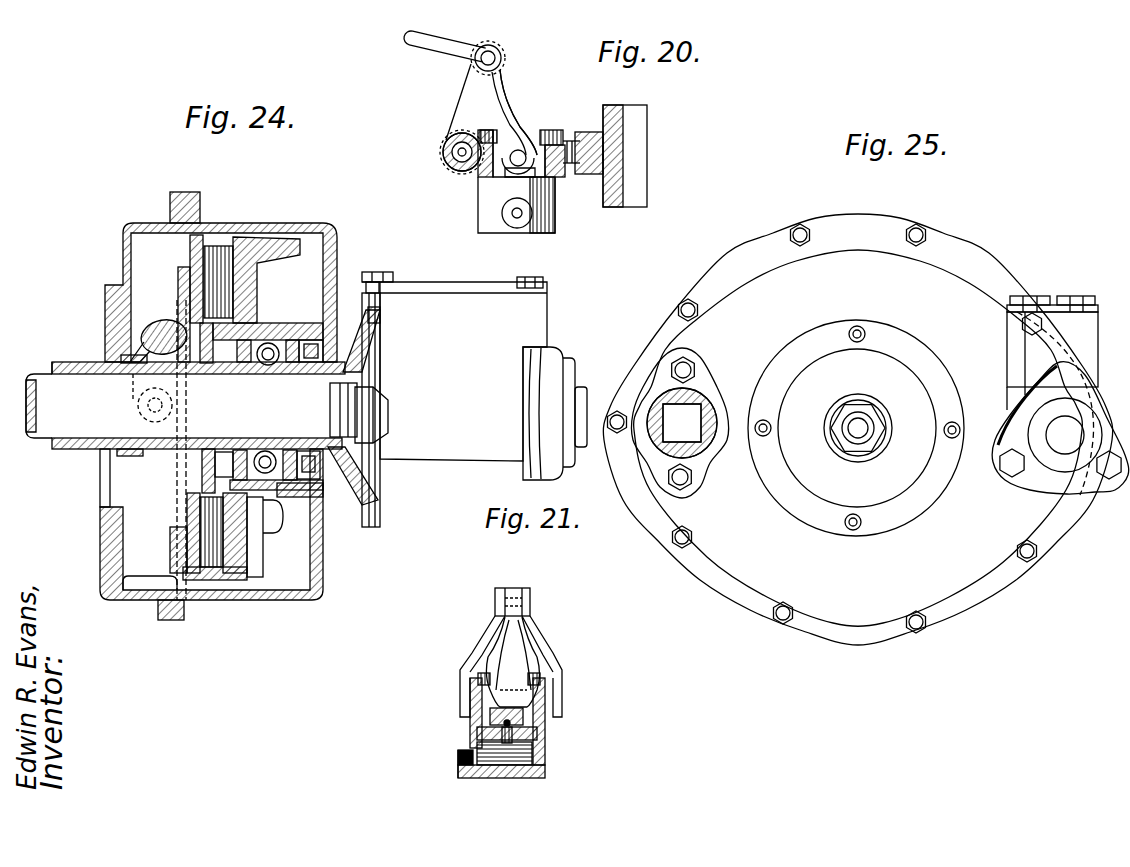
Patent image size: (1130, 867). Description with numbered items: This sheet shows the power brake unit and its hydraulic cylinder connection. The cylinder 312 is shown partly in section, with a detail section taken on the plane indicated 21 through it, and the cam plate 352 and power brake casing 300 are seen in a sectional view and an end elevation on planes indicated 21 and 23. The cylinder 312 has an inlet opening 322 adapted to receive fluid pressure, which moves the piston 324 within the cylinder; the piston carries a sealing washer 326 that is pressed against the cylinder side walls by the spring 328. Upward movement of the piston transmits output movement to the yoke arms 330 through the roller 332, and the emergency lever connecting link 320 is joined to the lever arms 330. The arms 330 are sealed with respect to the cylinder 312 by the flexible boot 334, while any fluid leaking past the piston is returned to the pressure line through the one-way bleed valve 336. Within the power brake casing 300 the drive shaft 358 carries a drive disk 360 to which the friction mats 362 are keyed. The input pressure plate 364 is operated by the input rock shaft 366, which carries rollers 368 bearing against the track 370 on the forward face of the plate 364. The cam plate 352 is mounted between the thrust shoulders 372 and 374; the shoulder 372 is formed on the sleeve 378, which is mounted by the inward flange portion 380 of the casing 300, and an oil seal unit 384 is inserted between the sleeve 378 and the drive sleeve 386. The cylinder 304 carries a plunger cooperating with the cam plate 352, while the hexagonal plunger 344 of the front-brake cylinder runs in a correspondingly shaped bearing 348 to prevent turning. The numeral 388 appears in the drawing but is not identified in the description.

In FIG. 24, the power brake casing 300 is at (247, 224).
In FIG. 25, the power brake casing 300 is at (853, 600).
In FIG. 24, the cylinder 304 is at (446, 318).
In FIG. 25, the cylinder 304 is at (1025, 382).
In FIG. 20, the cylinder 312 is at (552, 207).
In FIG. 21, the cylinder 312 is at (547, 750).
In FIG. 20, the emergency lever connecting link 320 is at (410, 44).
In FIG. 21, the emergency lever connecting link 320 is at (512, 591).
In FIG. 20, the inlet opening 322 is at (503, 213).
In FIG. 21, the inlet opening 322 is at (458, 756).
In FIG. 21, the piston 324 is at (520, 712).
In FIG. 21, the sealing washer 326 is at (538, 732).
In FIG. 21, the spring 328 is at (500, 760).
In FIG. 20, the yoke arms 330 is at (508, 127).
In FIG. 21, the yoke arms 330 is at (513, 692).
In FIG. 21, the roller 332 is at (530, 673).
In FIG. 20, the flexible boot 334 is at (540, 130).
In FIG. 21, the flexible boot 334 is at (482, 672).
In FIG. 21, the one-way bleed valve 336 is at (492, 722).
In FIG. 25, the plunger 344 is at (703, 400).
In FIG. 25, the bearing 348 is at (702, 455).
In FIG. 24, the cam plate 352 is at (257, 272).
In FIG. 24, the drive shaft 358 is at (52, 362).
In FIG. 24, the drive disk 360 is at (205, 470).
In FIG. 24, the friction mats 362 is at (200, 523).
In FIG. 24, the input pressure plate 364 is at (172, 557).
In FIG. 24, the input rock shaft 366 is at (140, 343).
In FIG. 24, the rollers 368 is at (133, 400).
In FIG. 24, the track 370 is at (191, 268).
In FIG. 24, the thrust shoulder 372 is at (249, 312).
In FIG. 24, the thrust shoulder 374 is at (283, 328).
In FIG. 24, the sleeve 378 is at (310, 338).
In FIG. 24, the inward flange portion 380 is at (300, 497).
In FIG. 24, the oil seal unit 384 is at (212, 330).
In FIG. 24, the drive sleeve 386 is at (350, 371).
In FIG. 25, the drive sleeve 386 is at (873, 461).
In FIG. 24, the lower bearing seal 388 is at (192, 500).
In FIG. 20, the section plane 21— 21 is at (524, 262).
In FIG. 24, the section line 23- 23 is at (267, 240).